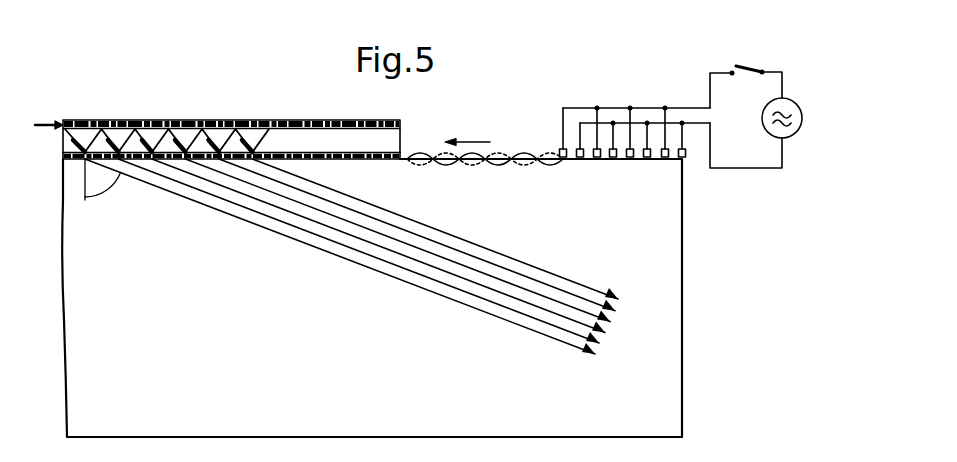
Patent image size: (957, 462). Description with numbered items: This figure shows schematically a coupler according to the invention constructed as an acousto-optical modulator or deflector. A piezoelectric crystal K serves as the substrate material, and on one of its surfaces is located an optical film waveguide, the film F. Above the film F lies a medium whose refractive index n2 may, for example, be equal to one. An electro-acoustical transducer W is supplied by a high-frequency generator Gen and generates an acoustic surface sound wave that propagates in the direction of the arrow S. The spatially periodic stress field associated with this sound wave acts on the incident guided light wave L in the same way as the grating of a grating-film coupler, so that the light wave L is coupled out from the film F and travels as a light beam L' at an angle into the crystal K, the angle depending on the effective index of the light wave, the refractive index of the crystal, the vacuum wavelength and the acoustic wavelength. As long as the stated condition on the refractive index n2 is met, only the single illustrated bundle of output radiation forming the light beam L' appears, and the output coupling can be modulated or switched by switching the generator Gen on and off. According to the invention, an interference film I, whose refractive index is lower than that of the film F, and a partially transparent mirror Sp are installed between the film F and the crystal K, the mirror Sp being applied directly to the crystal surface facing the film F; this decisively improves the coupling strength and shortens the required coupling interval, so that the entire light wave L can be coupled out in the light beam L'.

The light wave L is at (49, 113).
The refractive index of the medium above the film n2 is at (231, 108).
The film F is at (233, 121).
The interference film I is at (65, 141).
The light beam L' is at (374, 266).
The partially transparent mirror Sp is at (382, 161).
The propagation direction of the acoustic surface wave S is at (468, 142).
The electro-acoustical transducer W is at (645, 102).
The high-frequency generator Gen is at (768, 134).
The piezoelectric crystal K is at (679, 231).